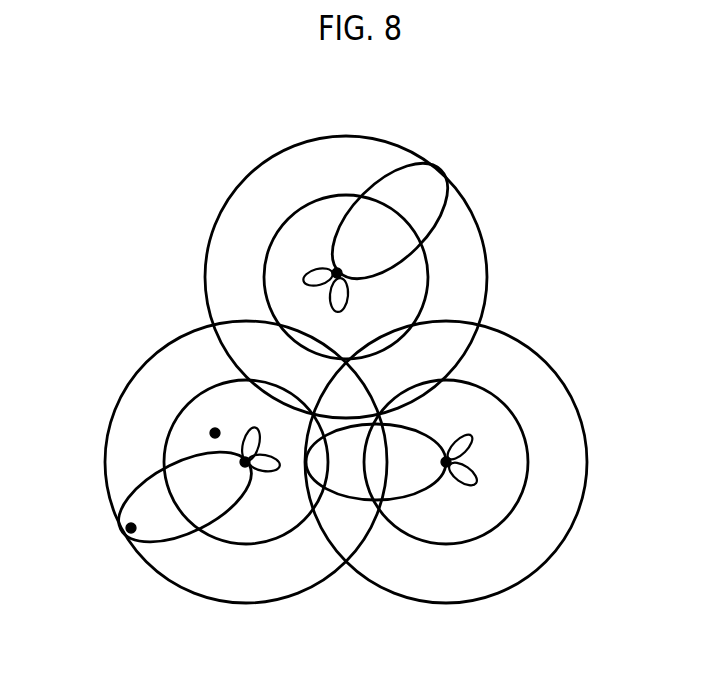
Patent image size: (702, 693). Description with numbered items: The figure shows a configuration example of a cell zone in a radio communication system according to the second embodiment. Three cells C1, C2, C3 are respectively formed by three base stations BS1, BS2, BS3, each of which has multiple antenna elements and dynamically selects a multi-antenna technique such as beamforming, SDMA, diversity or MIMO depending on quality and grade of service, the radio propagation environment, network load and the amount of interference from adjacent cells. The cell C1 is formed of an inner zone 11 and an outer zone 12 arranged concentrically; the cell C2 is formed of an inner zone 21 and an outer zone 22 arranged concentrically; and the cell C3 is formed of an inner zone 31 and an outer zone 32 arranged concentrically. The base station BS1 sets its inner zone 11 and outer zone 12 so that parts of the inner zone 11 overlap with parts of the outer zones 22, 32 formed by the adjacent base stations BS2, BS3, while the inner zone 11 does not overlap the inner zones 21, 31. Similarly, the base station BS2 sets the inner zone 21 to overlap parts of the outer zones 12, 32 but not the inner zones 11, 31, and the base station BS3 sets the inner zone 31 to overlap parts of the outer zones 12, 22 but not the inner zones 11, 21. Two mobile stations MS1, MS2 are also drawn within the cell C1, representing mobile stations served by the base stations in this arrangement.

The cell C1 is at (82, 393).
The cell C2 is at (597, 399).
The cell C3 is at (410, 131).
The inner zone 11 is at (282, 518).
The outer zone 12 is at (247, 580).
The inner zone 21 is at (452, 502).
The outer zone 22 is at (407, 580).
The inner zone 31 is at (405, 283).
The outer zone 32 is at (465, 242).
The base station BS1 is at (241, 464).
The base station BS2 is at (470, 443).
The base station BS3 is at (335, 273).
The mobile station MS1 is at (215, 428).
The mobile station MS2 is at (126, 538).